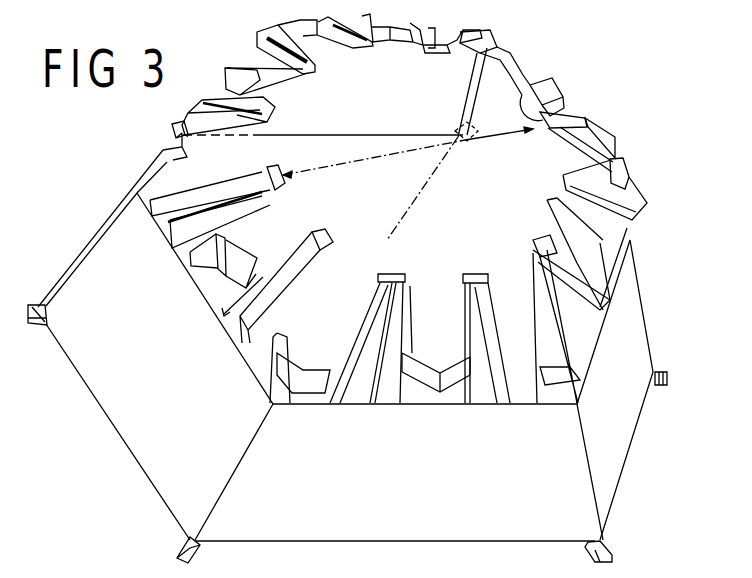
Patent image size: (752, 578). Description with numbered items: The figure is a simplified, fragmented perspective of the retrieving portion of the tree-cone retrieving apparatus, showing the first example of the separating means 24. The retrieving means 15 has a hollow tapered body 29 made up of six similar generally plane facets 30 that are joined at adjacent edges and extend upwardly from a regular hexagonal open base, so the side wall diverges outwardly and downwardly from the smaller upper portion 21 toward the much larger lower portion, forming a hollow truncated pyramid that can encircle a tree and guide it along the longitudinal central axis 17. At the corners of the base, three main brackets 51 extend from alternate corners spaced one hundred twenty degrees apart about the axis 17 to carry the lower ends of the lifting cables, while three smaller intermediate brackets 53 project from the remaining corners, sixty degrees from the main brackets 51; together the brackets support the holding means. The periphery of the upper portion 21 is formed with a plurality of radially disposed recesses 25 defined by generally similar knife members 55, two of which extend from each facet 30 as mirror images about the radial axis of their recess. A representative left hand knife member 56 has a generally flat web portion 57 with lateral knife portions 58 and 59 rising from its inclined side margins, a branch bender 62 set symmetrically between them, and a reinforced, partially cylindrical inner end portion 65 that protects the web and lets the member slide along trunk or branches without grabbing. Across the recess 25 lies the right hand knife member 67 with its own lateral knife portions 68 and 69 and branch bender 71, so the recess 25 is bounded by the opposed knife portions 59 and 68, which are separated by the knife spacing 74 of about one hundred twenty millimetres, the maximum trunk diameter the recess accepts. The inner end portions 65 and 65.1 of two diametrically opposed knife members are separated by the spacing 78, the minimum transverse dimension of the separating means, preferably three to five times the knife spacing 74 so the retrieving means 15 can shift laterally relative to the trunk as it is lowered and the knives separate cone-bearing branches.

The retrieving means 15 is at (626, 141).
The longitudinal central axis 17 is at (473, 67).
The upper portion 21 is at (558, 94).
The separating means 24 is at (590, 85).
The recesses 25 is at (268, 224).
The hollow tapered body 29 is at (640, 278).
The plane faces or facets 30 is at (362, 94).
The main brackets 51 is at (36, 327).
The intermediate brackets 53 is at (172, 126).
The knife members 55 is at (473, 268).
The left hand knife member 56 is at (595, 320).
The web portion 57 is at (600, 307).
The lateral knife portion 58 is at (578, 318).
The lateral knife portion 59 is at (630, 240).
The branch bender 62 is at (577, 290).
The inner end portion 65 is at (527, 87).
The inner end portion 65.1 is at (270, 163).
The right hand knife member 67 is at (640, 218).
The lateral knife portion 68 is at (580, 188).
The lateral knife portion 69 is at (617, 158).
The branch bender 71 is at (610, 217).
The knife spacing 74 is at (557, 200).
The spacing 78 is at (320, 167).